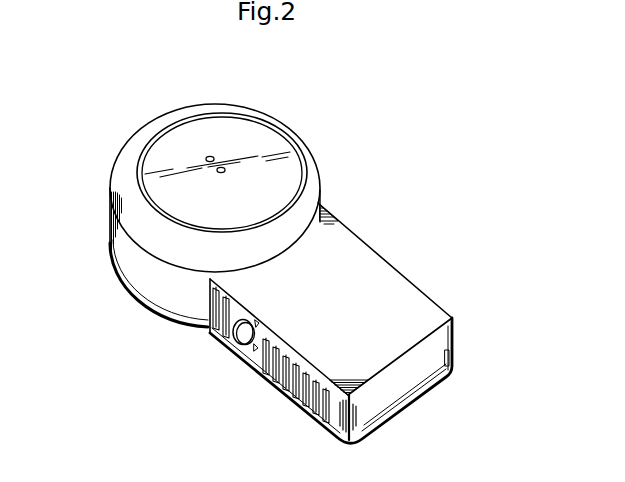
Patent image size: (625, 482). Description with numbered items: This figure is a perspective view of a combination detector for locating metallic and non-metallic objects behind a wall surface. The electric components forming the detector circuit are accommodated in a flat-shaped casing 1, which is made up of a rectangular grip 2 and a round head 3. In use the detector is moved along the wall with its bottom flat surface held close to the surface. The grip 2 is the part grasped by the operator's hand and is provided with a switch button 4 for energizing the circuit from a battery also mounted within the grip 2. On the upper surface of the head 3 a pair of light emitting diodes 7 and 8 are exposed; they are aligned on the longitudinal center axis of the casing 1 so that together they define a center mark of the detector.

The casing 1 is at (277, 250).
The grip 2 is at (352, 323).
The head 3 is at (195, 192).
The switch button 4 is at (237, 338).
The light emitting diode 7 is at (223, 167).
The light emitting diode 8 is at (210, 156).